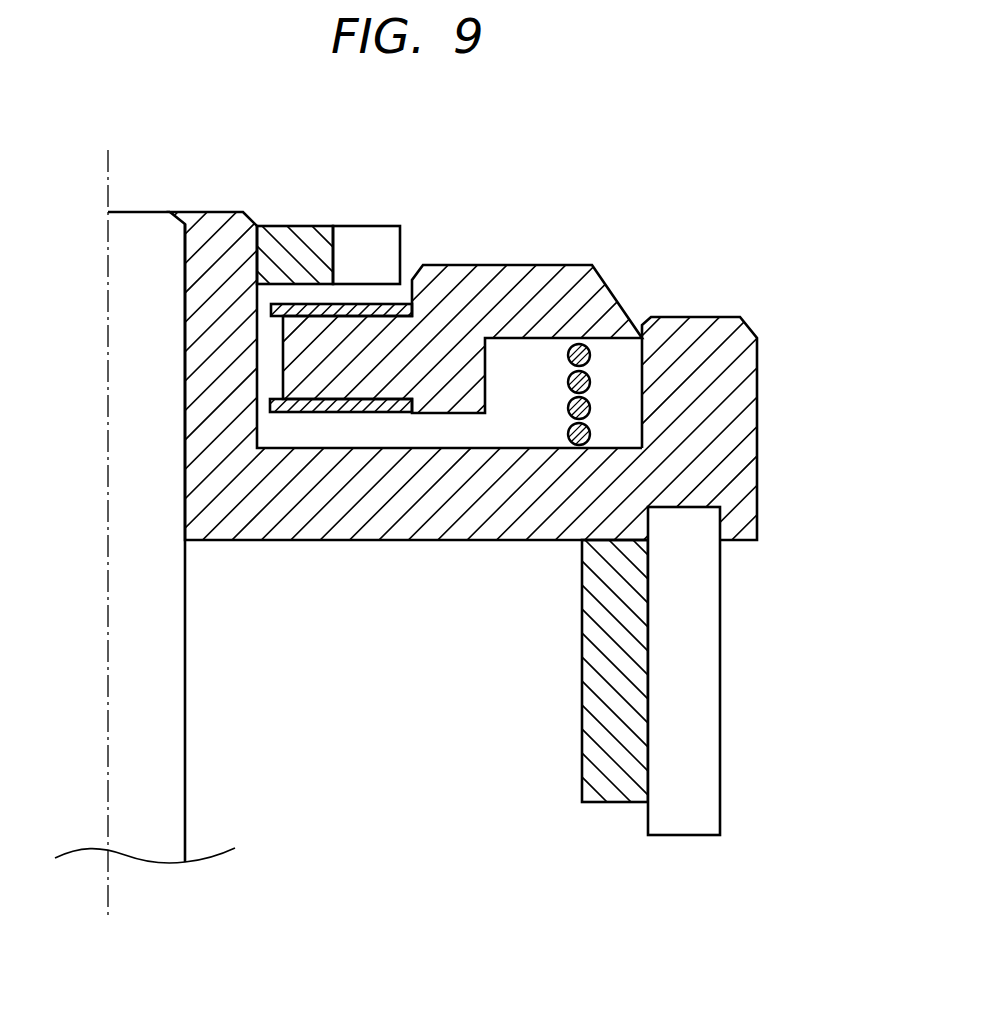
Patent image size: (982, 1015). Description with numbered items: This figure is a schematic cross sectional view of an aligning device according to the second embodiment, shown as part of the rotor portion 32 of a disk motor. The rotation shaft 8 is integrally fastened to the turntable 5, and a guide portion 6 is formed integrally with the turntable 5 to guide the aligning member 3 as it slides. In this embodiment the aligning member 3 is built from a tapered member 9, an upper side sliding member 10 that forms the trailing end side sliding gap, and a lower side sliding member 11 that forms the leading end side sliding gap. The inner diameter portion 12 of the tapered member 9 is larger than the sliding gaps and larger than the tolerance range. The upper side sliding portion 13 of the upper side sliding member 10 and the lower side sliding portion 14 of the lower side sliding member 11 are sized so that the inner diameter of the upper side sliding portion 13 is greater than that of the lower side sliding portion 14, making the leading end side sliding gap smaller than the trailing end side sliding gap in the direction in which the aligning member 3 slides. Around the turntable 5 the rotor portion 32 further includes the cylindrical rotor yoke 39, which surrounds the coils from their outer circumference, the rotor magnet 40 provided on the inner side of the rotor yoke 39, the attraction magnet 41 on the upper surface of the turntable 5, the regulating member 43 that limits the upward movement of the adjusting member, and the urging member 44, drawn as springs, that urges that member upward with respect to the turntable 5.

The aligning member 3 is at (597, 172).
The turntable 5 is at (735, 340).
The guide portion 6 is at (257, 350).
The rotation shaft 8 is at (163, 795).
The tapered member 9 is at (565, 283).
The upper side sliding member 10 is at (358, 308).
The lower side sliding member 11 is at (397, 400).
The inner diameter portion 12 is at (283, 382).
The upper side sliding portion 13 is at (273, 311).
The lower side sliding portion 14 is at (270, 404).
The rotor portion 32 is at (757, 187).
The rotor yoke 39 is at (702, 710).
The rotor magnet 40 is at (613, 702).
The attraction magnet 41 is at (280, 247).
The regulating member 43 is at (352, 240).
The urging member 44 is at (591, 408).